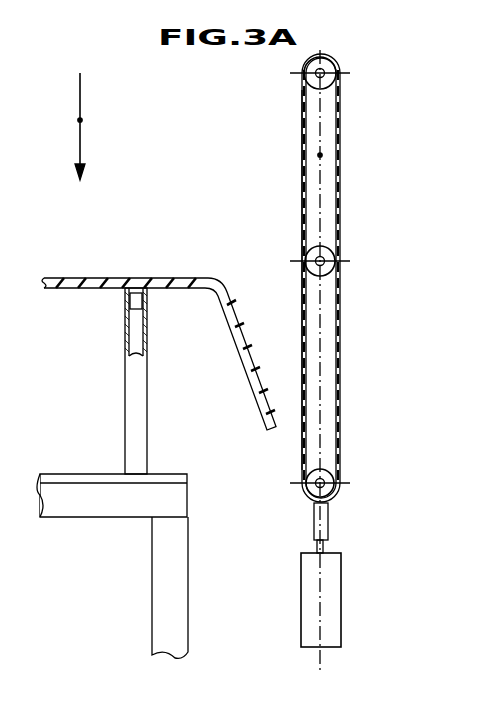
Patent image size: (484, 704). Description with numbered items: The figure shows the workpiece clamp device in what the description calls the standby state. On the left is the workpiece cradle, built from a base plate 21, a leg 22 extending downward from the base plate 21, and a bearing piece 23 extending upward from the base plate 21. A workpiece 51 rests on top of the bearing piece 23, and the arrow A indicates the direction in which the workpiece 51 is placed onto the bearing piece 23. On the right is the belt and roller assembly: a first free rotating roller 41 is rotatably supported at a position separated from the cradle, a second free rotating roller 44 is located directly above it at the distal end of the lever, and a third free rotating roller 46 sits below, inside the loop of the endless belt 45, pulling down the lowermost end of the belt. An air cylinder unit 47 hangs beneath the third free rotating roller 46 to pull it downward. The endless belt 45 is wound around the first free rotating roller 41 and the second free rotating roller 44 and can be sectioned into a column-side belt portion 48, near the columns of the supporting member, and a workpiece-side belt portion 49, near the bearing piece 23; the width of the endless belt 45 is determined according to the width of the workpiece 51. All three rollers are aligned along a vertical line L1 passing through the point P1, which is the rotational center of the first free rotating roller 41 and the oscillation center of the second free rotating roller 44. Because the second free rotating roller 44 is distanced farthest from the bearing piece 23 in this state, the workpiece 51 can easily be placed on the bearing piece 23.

The arrow A is at (80, 120).
The workpiece 51 is at (134, 278).
The bearing piece 23 is at (125, 375).
The base plate 21 is at (88, 478).
The leg 22 is at (180, 578).
The column-side belt portion 48 is at (340, 195).
The workpiece-side belt portion 49 is at (300, 210).
The vertical line L1 is at (320, 155).
The second free rotating roller 44 is at (336, 62).
The endless belt 45 is at (324, 58).
The first free rotating roller 41 is at (335, 253).
The rotational center P1 is at (333, 272).
The third free rotating roller 46 is at (330, 475).
The air cylinder unit 47 is at (332, 598).